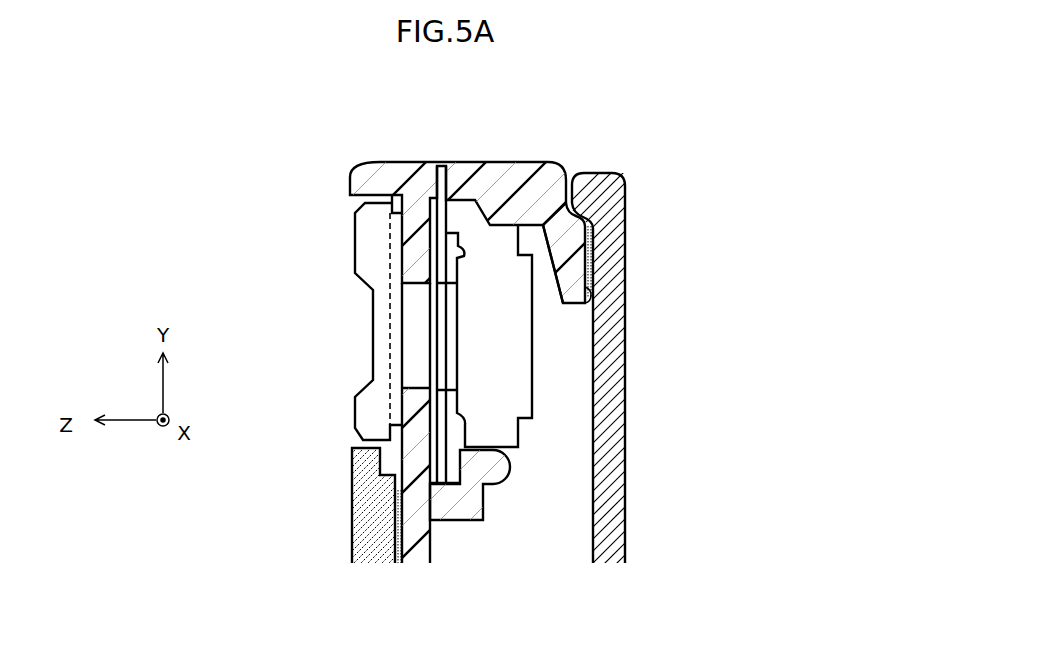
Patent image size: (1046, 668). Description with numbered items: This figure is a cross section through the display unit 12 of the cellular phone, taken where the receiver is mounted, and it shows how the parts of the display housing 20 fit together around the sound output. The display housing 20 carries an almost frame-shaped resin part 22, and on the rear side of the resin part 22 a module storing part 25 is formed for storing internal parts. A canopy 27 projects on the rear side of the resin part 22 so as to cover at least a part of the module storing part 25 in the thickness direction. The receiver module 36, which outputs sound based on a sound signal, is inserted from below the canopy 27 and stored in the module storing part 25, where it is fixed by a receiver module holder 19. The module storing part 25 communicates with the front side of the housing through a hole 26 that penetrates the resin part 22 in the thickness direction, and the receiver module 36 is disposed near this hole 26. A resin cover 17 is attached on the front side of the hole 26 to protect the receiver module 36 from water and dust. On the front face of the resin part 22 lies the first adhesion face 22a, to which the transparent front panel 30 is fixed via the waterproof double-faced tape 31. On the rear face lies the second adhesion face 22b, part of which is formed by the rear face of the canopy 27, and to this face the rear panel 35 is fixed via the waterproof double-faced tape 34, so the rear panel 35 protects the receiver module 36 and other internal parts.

The display unit 12 is at (664, 105).
The cover 17 is at (378, 316).
The receiver module holder 19 is at (465, 509).
The display housing 20 is at (479, 147).
The resin part 22 is at (383, 180).
The first adhesion face 22a is at (402, 558).
The second adhesion face 22b is at (586, 300).
The module storing part 25 is at (441, 165).
The hole 26 is at (417, 375).
The canopy 27 is at (567, 270).
The front panel 30 is at (368, 533).
The double-faced tape 31 is at (395, 492).
The double-faced tape 34 is at (592, 242).
The rear panel 35 is at (608, 476).
The receiver module 36 is at (512, 400).